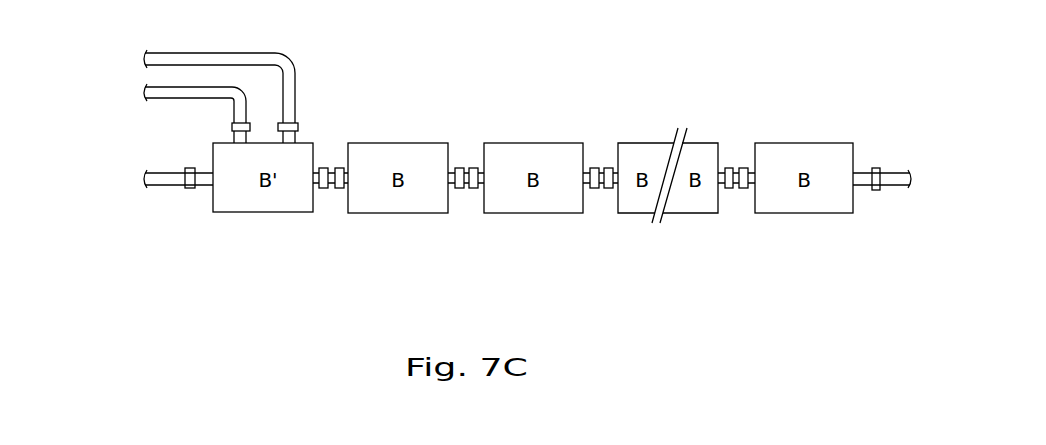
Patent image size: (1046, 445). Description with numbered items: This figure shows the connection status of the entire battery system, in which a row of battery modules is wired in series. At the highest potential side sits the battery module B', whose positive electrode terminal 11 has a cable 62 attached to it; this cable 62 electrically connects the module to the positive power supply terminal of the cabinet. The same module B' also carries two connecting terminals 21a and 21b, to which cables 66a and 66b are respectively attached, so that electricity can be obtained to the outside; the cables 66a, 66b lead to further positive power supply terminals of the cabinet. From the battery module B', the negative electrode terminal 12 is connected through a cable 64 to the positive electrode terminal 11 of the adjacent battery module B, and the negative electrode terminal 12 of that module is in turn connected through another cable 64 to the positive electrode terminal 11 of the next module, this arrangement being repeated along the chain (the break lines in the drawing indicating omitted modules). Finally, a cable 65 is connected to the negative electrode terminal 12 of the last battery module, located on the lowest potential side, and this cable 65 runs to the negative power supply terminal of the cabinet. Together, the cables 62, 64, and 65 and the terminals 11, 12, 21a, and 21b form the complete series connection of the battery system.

The cable 66b is at (183, 86).
The cable 66a is at (159, 103).
The connecting terminal 21a is at (230, 128).
The connecting terminal 21b is at (293, 123).
The cable 62 is at (165, 178).
The positive electrode terminal 11 is at (190, 190).
The cable 64 is at (324, 168).
The cable 65 is at (893, 178).
The negative electrode terminal 12 is at (877, 192).